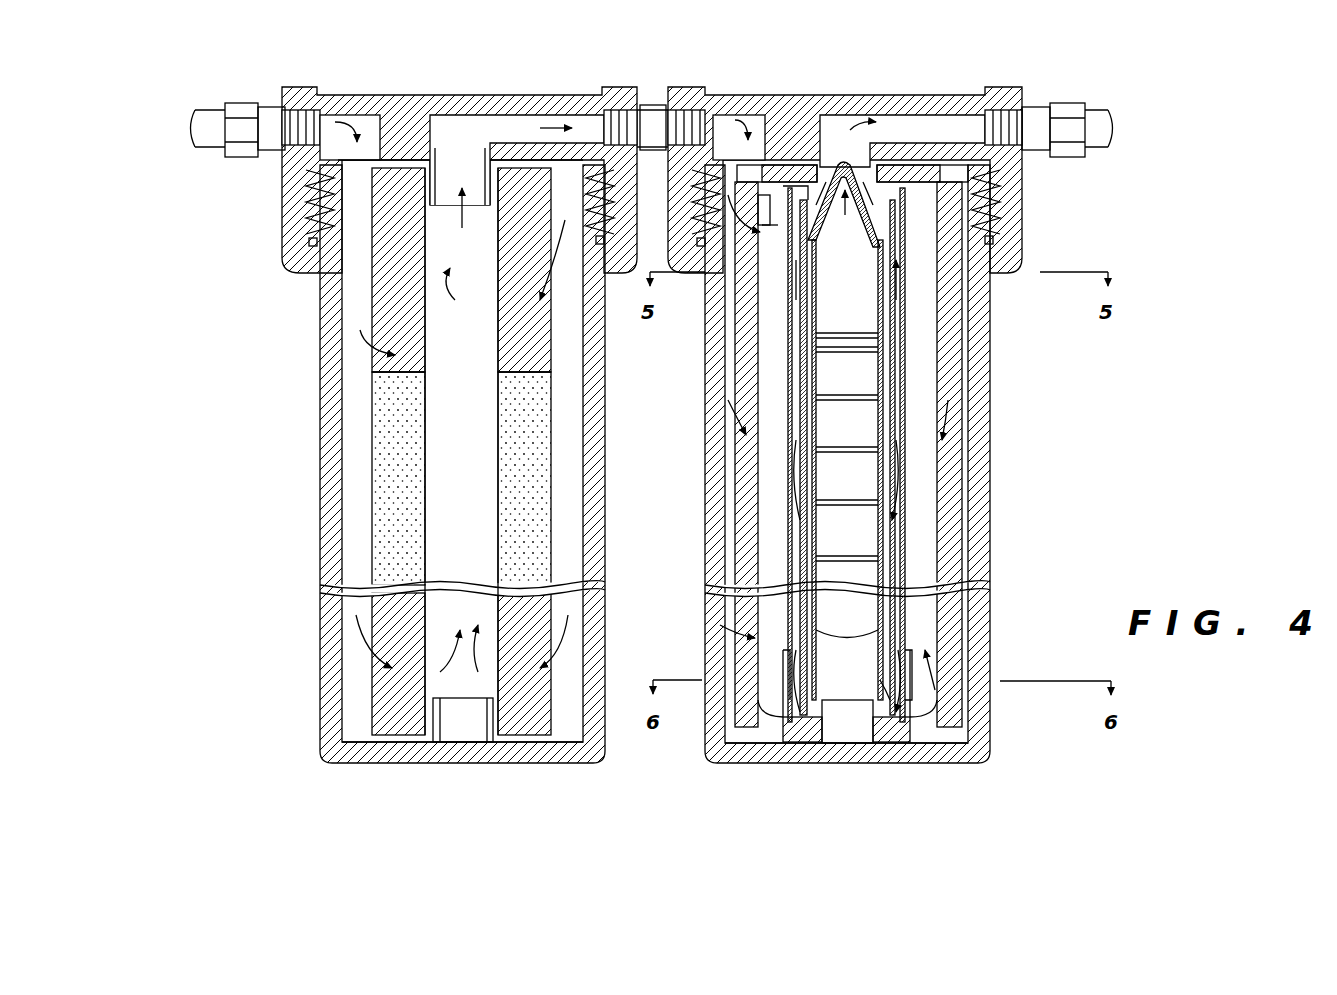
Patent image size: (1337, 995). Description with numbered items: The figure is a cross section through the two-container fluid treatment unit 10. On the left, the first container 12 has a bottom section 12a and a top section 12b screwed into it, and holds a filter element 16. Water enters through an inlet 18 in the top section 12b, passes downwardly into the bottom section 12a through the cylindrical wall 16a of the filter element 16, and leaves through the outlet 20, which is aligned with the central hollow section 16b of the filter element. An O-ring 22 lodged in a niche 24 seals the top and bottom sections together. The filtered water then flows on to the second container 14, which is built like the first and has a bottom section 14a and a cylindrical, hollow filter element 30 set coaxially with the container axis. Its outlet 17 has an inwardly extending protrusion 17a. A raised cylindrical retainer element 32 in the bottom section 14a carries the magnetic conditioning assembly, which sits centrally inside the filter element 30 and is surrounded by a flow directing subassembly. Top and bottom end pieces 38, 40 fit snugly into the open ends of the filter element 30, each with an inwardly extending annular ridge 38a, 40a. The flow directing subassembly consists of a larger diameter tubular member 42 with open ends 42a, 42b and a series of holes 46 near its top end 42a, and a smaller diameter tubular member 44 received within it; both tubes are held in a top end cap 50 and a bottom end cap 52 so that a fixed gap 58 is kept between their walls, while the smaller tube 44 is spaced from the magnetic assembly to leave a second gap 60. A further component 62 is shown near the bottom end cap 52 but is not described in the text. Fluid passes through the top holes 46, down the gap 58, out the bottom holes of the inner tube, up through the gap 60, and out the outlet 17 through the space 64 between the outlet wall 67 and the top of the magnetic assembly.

The filter assembly 10 is at (262, 489).
The container 12 is at (322, 562).
The bottom section 12a is at (330, 679).
The top section 12b is at (567, 103).
The second container 14 is at (994, 524).
The bottom section 14a is at (983, 456).
The filter element 16 is at (387, 453).
The cylindrical wall 16a is at (385, 312).
The central hollow section 16b is at (477, 337).
The outlet 17 is at (957, 127).
The inwardly extending protrusion 17a is at (817, 197).
The inlet 18 is at (237, 135).
The outlet 20 is at (476, 210).
The O-ring 22 is at (310, 243).
The niche 24 is at (598, 240).
The filter element 30 is at (745, 530).
The raised cylindrical retainer element 32 is at (822, 728).
The top end piece 38 is at (767, 200).
The inwardly extending annular ridge 38a is at (773, 225).
The bottom end piece 40 is at (767, 732).
The inwardly extending annular ridge 40a is at (762, 705).
The larger diameter tubular member 42 is at (908, 489).
The top end 42a is at (778, 188).
The bottom end 42b is at (793, 722).
The smaller diameter tubular member 44 is at (905, 559).
The holes 46 is at (903, 257).
The top end cap 50 is at (912, 210).
The bottom end cap 52 is at (910, 670).
The fixed gap 58 is at (895, 362).
The second gap 60 is at (889, 405).
The check valve 62 is at (887, 692).
The space 64 is at (870, 222).
The wall 67 is at (860, 233).